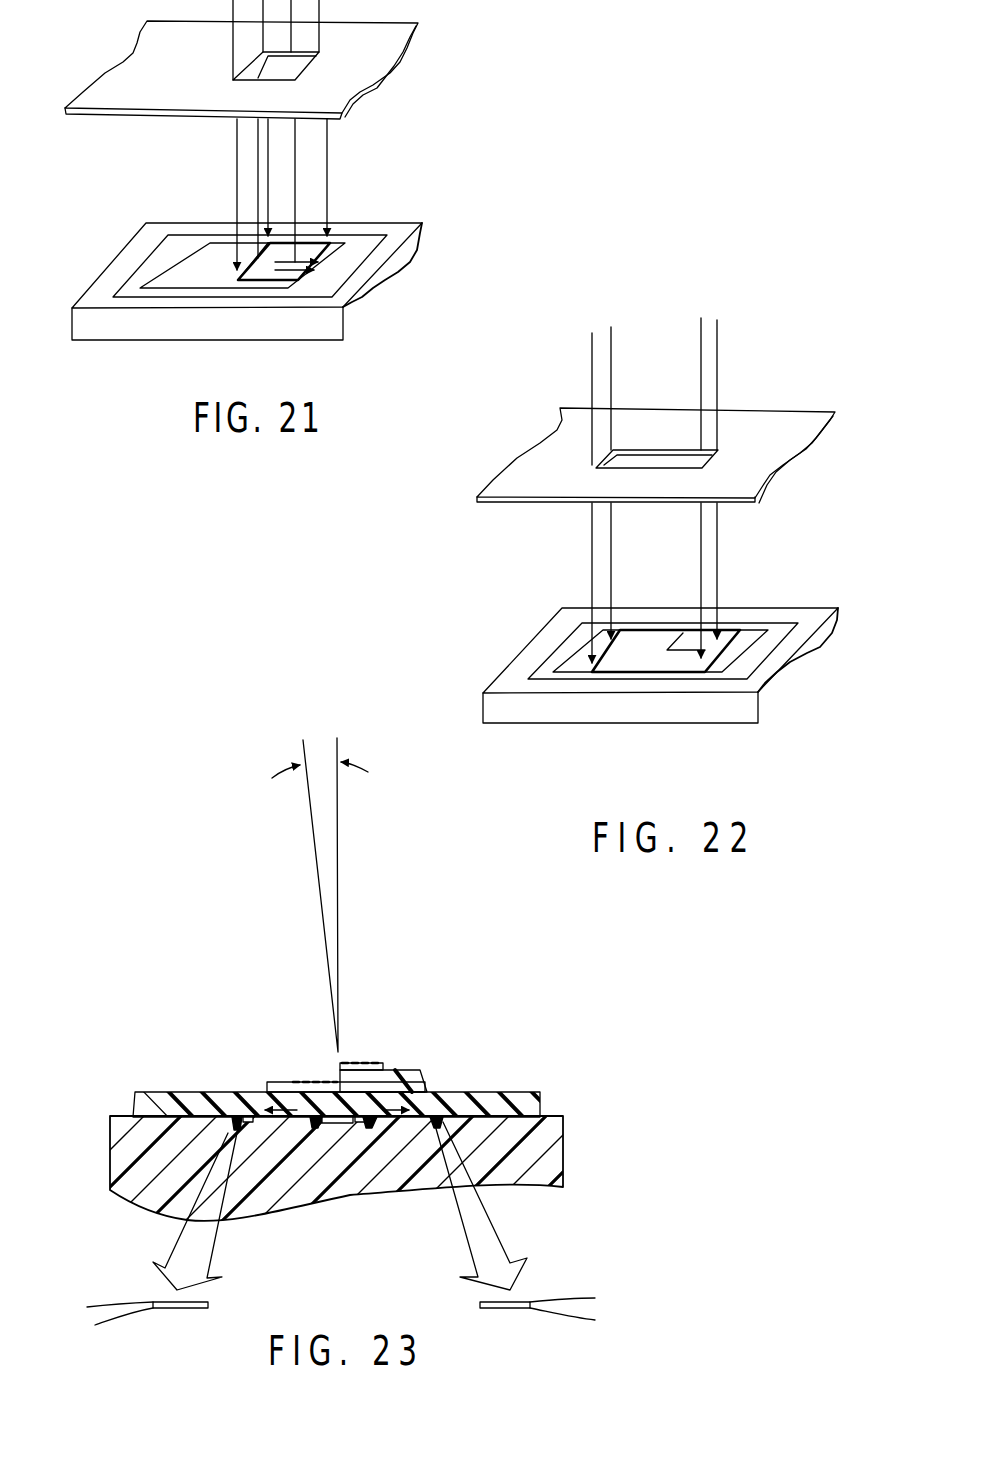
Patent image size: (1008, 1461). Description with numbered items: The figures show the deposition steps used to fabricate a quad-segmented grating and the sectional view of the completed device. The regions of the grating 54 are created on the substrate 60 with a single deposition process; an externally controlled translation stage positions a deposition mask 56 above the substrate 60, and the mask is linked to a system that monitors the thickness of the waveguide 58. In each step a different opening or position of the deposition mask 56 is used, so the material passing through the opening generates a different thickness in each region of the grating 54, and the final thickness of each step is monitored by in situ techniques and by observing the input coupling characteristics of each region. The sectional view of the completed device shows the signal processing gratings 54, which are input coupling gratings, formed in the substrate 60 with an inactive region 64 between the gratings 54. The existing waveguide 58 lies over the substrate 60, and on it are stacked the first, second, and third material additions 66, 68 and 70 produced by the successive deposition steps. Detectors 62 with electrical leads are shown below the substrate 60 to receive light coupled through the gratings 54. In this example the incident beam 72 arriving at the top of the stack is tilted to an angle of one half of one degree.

In FIG. 21, the grating 54 is at (265, 283).
In FIG. 22, the grating 54 is at (662, 672).
In FIG. 23, the grating 54 is at (312, 1130).
In FIG. 21, the deposition mask 56 is at (407, 33).
In FIG. 22, the deposition mask 56 is at (808, 446).
In FIG. 21, the waveguide 58 is at (168, 272).
In FIG. 22, the waveguide 58 is at (577, 664).
In FIG. 23, the waveguide 58 is at (537, 1098).
In FIG. 21, the substrate 60 is at (380, 288).
In FIG. 22, the substrate 60 is at (787, 680).
In FIG. 23, the substrate 60 is at (557, 1150).
In FIG. 23, the detectors 62 is at (160, 1300).
In FIG. 23, the inactive region 64 is at (340, 1124).
In FIG. 23, the first material addition 66 is at (423, 1082).
In FIG. 23, the second material addition 68 is at (412, 1068).
In FIG. 23, the third material addition 70 is at (362, 1063).
In FIG. 23, the incident beam 72 is at (312, 825).